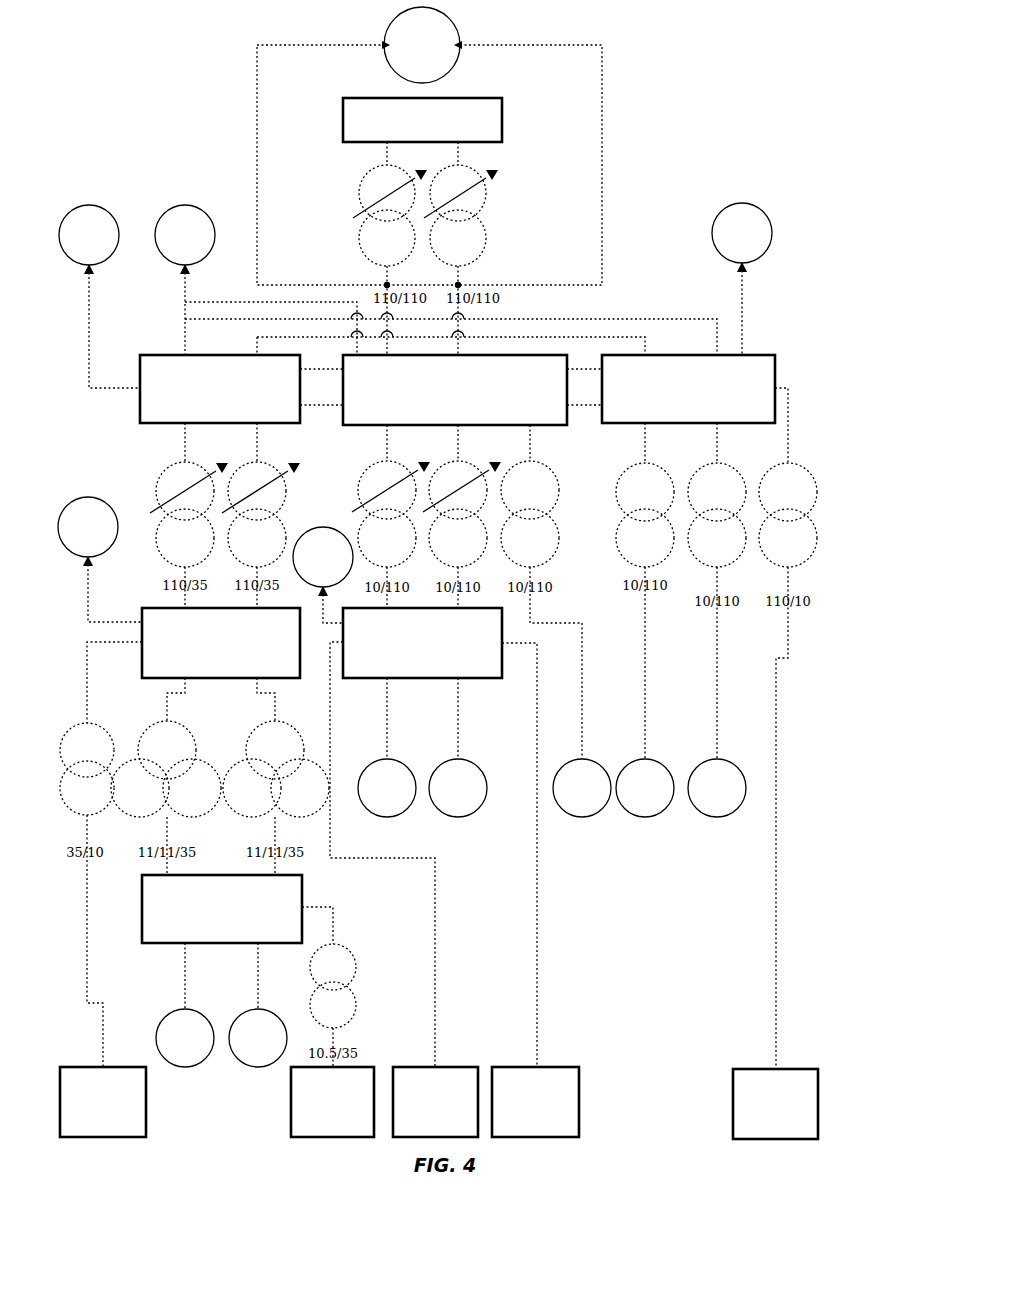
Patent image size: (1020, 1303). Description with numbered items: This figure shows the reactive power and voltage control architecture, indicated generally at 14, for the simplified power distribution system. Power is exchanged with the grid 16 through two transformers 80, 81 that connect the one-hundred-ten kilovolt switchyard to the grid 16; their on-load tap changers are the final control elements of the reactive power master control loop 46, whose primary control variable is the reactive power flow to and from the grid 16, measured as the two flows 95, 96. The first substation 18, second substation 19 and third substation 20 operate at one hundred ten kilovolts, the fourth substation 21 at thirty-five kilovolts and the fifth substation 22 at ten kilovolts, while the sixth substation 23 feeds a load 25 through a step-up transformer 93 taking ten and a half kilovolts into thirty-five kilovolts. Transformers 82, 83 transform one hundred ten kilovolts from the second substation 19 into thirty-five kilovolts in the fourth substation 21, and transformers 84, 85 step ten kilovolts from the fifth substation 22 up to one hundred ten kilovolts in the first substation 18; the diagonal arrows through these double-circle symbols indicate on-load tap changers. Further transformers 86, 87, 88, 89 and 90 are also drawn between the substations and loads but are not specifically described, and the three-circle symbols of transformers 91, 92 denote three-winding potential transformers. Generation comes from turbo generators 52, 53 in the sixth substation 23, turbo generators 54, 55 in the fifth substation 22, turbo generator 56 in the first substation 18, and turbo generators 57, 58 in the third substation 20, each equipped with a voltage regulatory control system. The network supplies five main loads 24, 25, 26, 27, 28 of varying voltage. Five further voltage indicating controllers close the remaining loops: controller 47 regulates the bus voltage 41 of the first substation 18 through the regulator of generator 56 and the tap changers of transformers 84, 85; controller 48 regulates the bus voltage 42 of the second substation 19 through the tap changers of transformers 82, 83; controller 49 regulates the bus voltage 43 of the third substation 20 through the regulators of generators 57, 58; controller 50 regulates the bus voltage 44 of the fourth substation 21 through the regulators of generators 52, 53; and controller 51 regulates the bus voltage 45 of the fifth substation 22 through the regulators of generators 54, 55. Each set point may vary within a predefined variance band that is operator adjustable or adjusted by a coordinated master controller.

The power system 14 is at (716, 56).
The grid 16 is at (343, 110).
The Substation 1 18 is at (547, 425).
The Substation 2 19 is at (170, 355).
The Substation 3 20 is at (750, 355).
The Substation 4 21 is at (273, 678).
The Substation 5 22 is at (473, 678).
The Substation 6 23 is at (142, 918).
The LOAD 1 24 is at (146, 1118).
The LOAD 2 25 is at (291, 1118).
The LOAD 3 26 is at (443, 1065).
The LOAD 4 27 is at (553, 1065).
The LOAD 5 28 is at (757, 1067).
The Substation 1 bus voltage 41 is at (265, 300).
The Substation 2 bus voltage 42 is at (98, 348).
The Substation 3 bus voltage 43 is at (753, 297).
The Substation 4 bus voltage 44 is at (102, 610).
The Substation 5 bus voltage 45 is at (327, 633).
The VIC0 reactive power master control loop 46 is at (456, 63).
The VIC1 control loop 47 is at (185, 205).
The VIC2 control loop 48 is at (89, 205).
The VIC3 control loop 49 is at (752, 205).
The VIC4 control loop 50 is at (110, 506).
The VIC5 control loop 51 is at (322, 528).
The turbo generator TG1 52 is at (175, 1011).
The turbo generator TG2 53 is at (248, 1011).
The turbo generator TG3 54 is at (398, 762).
The turbo generator TG4 55 is at (470, 762).
The turbo generator TG5 56 is at (590, 761).
The turbo generator TG6 57 is at (660, 771).
The turbo generator TG7 58 is at (713, 816).
The transformer T-1 80 is at (360, 183).
The transformer T-2 81 is at (470, 168).
The transformer T-3 82 is at (173, 468).
The transformer T-4 83 is at (245, 468).
The transformer T-5 84 is at (375, 468).
The transformer T-6 85 is at (447, 468).
The transformer 86 is at (520, 468).
The transformer 87 is at (625, 477).
The transformer 88 is at (712, 465).
The transformer 89 is at (782, 465).
The transformer 90 is at (92, 722).
The three winding potential transformer 91 is at (178, 721).
The three winding potential transformer 92 is at (260, 733).
The step-up transformer 93 is at (345, 946).
The PV1 reactive power flow 95 is at (245, 160).
The PV2 reactive power flow 96 is at (615, 160).